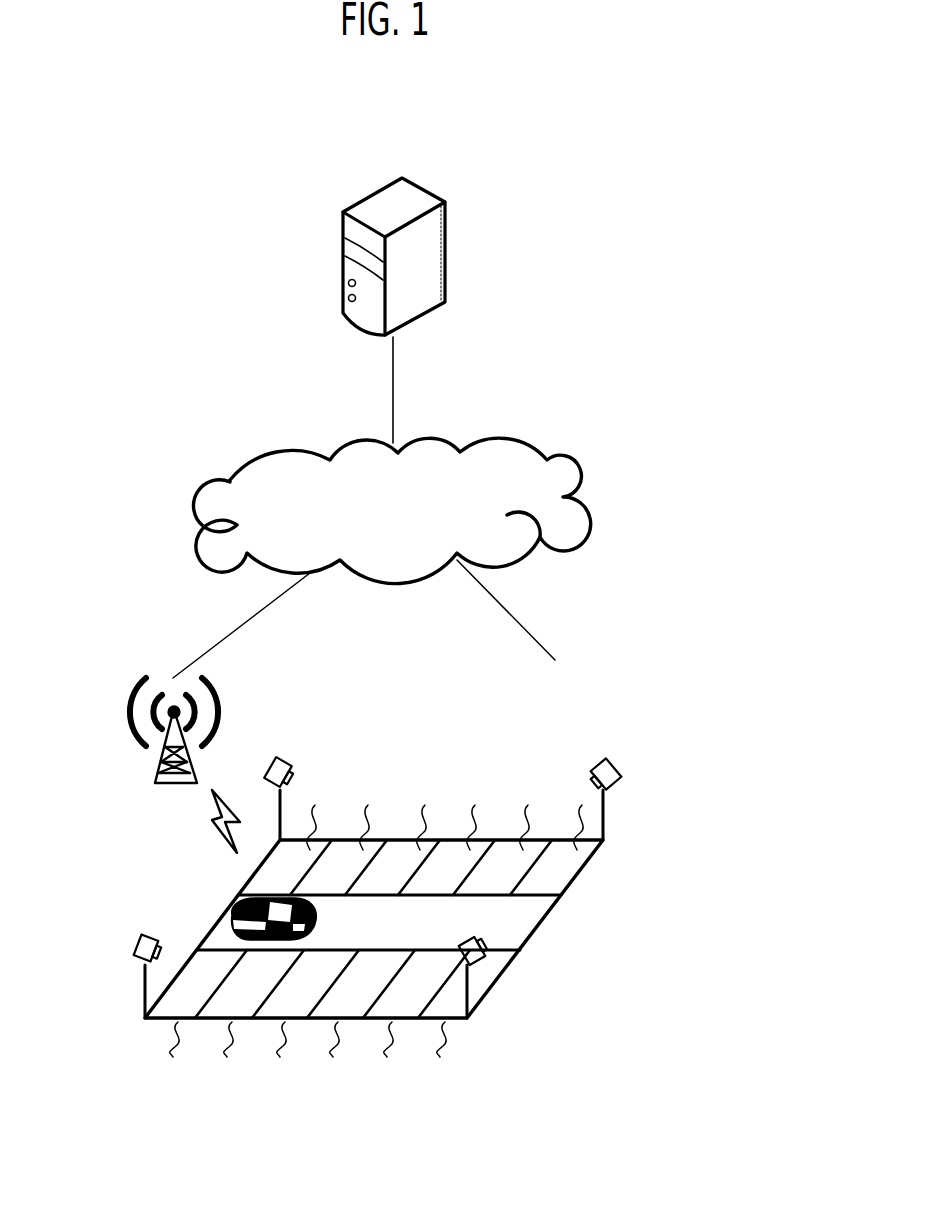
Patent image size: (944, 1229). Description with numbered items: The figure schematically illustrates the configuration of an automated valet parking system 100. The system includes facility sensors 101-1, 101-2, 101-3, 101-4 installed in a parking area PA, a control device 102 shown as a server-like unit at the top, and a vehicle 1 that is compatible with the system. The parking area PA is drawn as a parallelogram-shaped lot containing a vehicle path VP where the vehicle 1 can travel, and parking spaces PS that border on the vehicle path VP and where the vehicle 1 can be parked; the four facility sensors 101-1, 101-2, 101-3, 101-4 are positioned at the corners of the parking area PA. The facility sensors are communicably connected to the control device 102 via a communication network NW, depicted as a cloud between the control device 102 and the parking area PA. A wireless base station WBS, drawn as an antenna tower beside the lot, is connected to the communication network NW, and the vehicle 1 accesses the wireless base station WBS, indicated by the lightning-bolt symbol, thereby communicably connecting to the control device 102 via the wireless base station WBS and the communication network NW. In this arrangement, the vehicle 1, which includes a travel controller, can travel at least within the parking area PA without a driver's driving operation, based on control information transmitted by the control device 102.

The automated valet parking system 100 is at (683, 225).
The control device 102 is at (428, 198).
The communication network NW is at (586, 495).
The wireless base station WBS is at (155, 783).
The parking area PA is at (378, 896).
The parking spaces PS is at (597, 800).
The vehicle path VP is at (520, 920).
The facility sensor 101-1 is at (603, 760).
The facility sensor 101-2 is at (483, 957).
The facility sensor 101-3 is at (137, 963).
The facility sensor 101-4 is at (327, 733).
The vehicle 1 is at (230, 932).